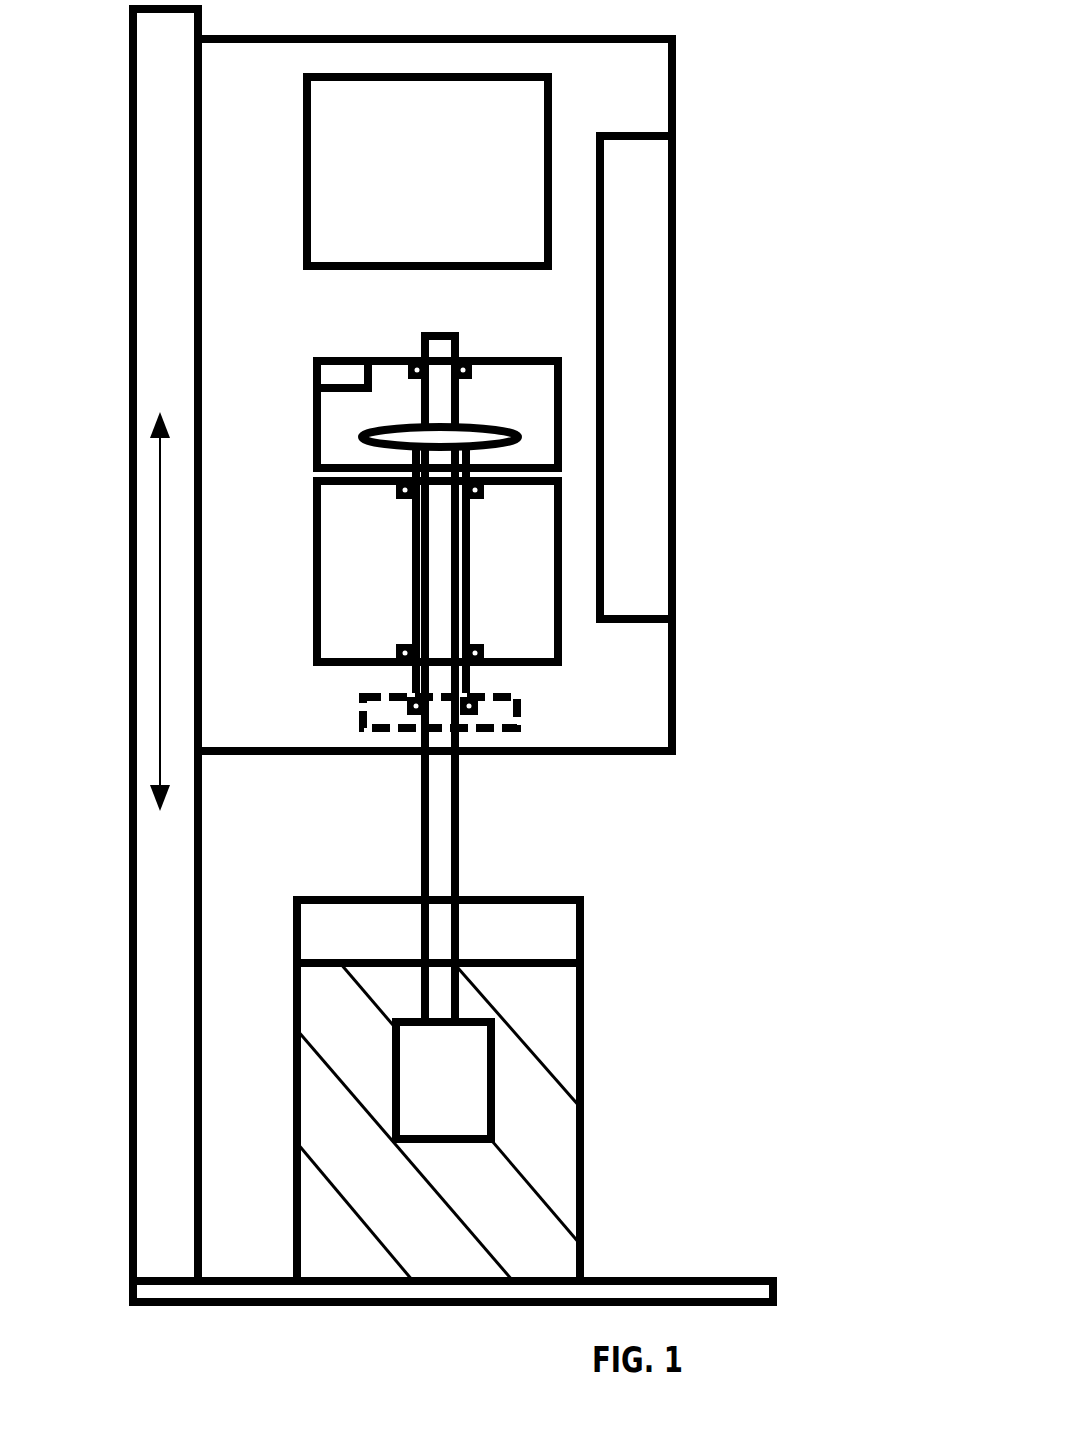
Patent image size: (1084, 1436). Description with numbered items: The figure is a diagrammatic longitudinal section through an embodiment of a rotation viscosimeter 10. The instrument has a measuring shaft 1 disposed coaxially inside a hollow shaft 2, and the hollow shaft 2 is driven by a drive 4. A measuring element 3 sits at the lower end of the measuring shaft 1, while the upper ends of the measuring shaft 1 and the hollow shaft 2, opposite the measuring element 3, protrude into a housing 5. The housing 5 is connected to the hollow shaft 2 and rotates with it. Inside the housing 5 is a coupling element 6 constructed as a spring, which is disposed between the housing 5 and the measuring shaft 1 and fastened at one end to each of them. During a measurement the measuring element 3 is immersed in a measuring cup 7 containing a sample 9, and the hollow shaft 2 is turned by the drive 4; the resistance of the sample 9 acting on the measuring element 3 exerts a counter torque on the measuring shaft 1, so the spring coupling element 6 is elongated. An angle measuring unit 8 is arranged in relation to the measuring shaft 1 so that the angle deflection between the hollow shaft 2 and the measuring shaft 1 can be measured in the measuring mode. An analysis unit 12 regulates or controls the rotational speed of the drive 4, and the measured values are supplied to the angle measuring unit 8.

The measuring shaft 1 is at (440, 538).
The hollow shaft 2 is at (467, 612).
The measuring element 3 is at (452, 1075).
The drive 4 is at (347, 605).
The housing 5 is at (560, 417).
The coupling element 6 is at (480, 425).
The measuring cup 7 is at (580, 967).
The angle measuring unit 8 is at (503, 720).
The sample 9 is at (362, 1000).
The rotation viscosimeter 10 is at (836, 139).
The analysis unit 12 is at (505, 187).